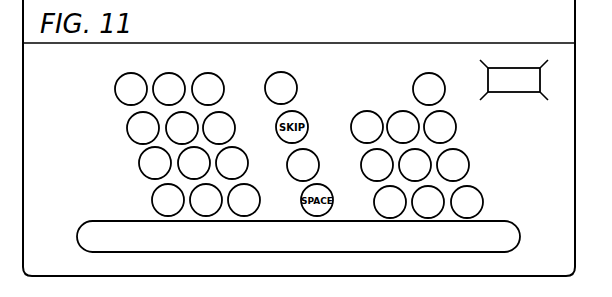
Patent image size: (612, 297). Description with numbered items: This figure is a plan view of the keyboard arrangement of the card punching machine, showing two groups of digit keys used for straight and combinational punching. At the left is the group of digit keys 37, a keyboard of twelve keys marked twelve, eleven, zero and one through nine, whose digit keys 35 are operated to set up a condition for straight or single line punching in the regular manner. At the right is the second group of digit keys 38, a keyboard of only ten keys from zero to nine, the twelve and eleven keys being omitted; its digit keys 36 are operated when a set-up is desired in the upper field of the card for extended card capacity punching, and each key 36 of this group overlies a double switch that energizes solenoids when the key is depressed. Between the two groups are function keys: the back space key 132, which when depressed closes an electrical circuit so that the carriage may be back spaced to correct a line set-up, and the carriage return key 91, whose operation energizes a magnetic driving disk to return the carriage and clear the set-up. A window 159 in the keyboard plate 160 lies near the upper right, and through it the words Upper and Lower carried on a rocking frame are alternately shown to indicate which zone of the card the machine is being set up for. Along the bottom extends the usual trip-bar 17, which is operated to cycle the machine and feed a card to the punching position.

The trip-bar 17 is at (463, 237).
The digit keys 35 is at (170, 116).
The digit keys 36 is at (368, 112).
The group of digit keys 37 is at (103, 182).
The group of digit keys 38 is at (495, 133).
The carriage return key 91 is at (311, 150).
The back space key 132 is at (294, 79).
The window 159 is at (540, 80).
The keyboard plate 160 is at (435, 76).